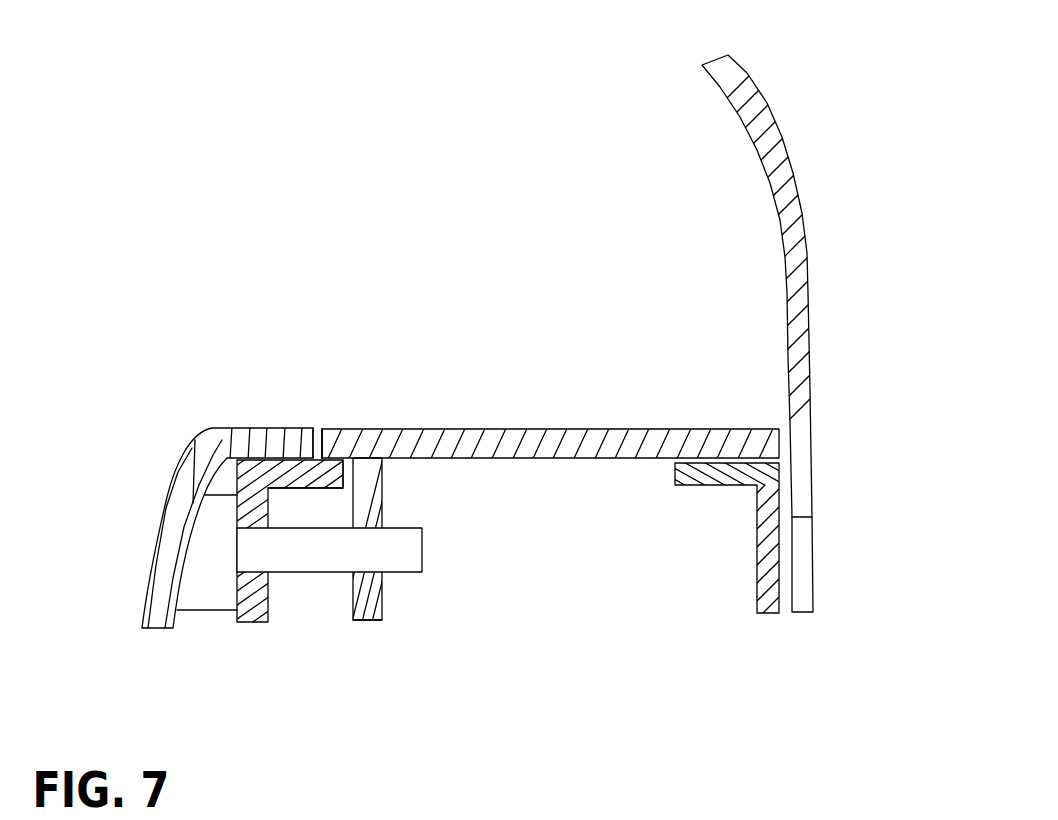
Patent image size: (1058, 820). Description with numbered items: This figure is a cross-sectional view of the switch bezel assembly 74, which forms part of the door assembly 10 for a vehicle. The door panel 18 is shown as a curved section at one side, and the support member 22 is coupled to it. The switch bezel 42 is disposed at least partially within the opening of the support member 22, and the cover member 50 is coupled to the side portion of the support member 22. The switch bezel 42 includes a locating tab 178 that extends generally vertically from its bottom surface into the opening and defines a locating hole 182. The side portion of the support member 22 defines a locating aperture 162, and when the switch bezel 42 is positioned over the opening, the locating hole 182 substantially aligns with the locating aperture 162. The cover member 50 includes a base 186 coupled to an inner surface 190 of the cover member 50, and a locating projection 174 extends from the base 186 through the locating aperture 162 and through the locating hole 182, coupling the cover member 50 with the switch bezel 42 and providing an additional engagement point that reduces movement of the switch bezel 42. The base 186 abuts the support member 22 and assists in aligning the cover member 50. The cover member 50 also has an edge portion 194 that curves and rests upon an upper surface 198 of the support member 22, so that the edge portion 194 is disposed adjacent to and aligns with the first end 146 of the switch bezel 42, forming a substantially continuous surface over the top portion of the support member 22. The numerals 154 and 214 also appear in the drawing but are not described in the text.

The door assembly 10 is at (481, 410).
The door panel 18 is at (802, 353).
The support member 22 is at (277, 523).
The switch bezel 42 is at (559, 399).
The cover member 50 is at (203, 506).
The switch bezel assembly 74 is at (148, 556).
The first end 146 is at (342, 442).
The bracket 154 is at (777, 444).
The locating aperture 162 is at (270, 507).
The locating projection 174 is at (408, 549).
The locating tab 178 is at (420, 581).
The locating hole 182 is at (382, 580).
The base 186 is at (208, 515).
The inner surface 190 is at (177, 626).
The edge portion 194 is at (236, 442).
The upper surface 198 is at (317, 450).
The cover 214 is at (440, 819).